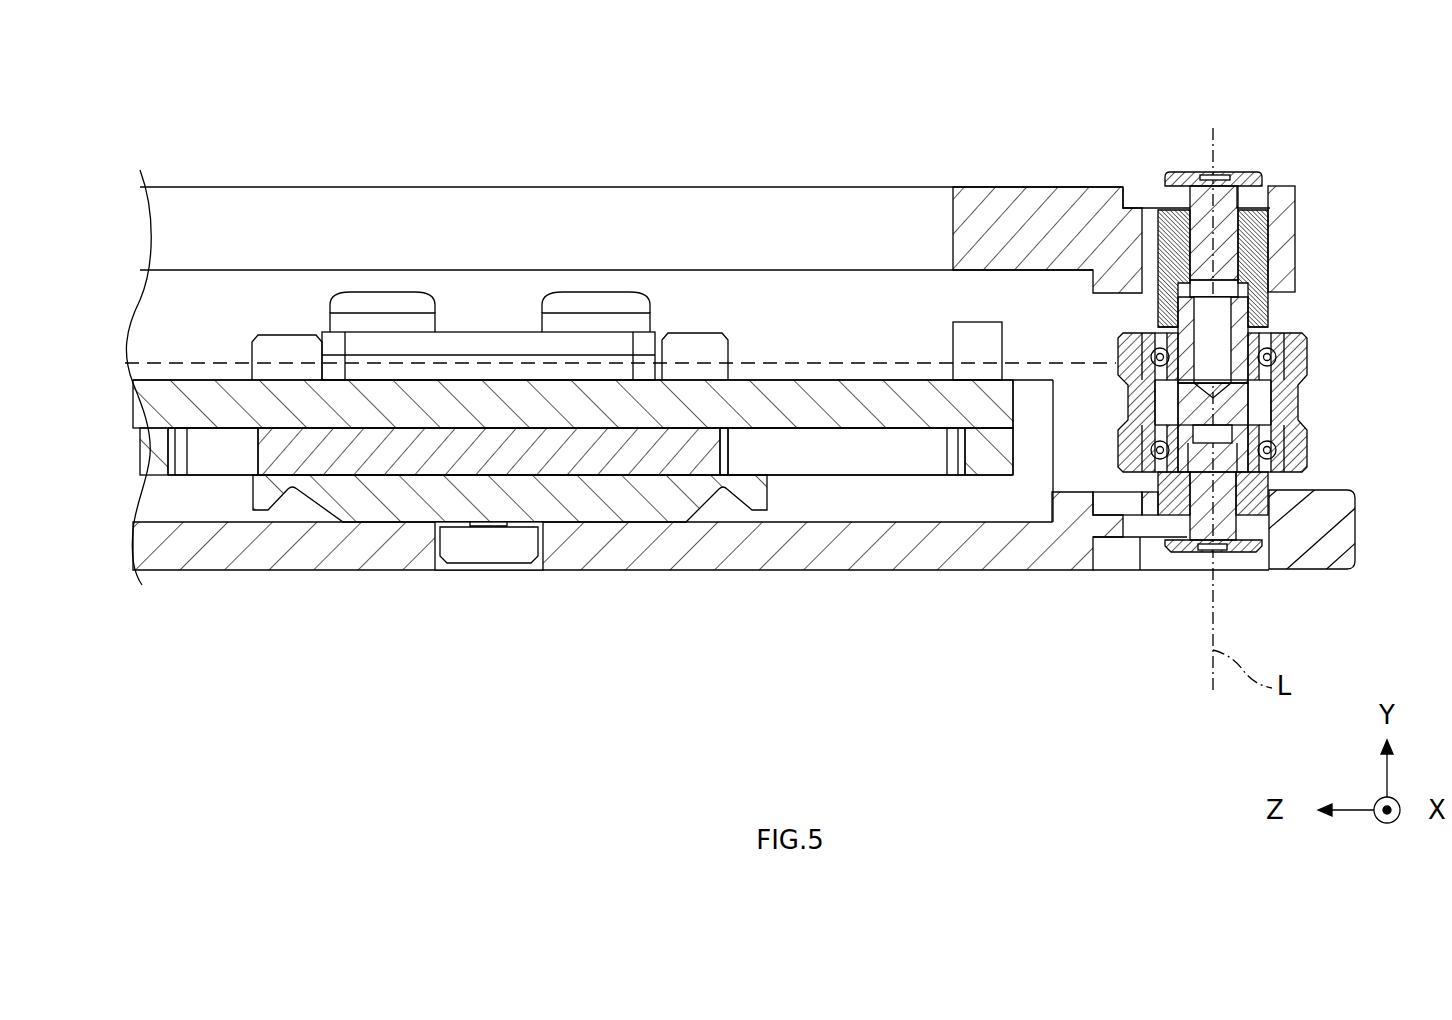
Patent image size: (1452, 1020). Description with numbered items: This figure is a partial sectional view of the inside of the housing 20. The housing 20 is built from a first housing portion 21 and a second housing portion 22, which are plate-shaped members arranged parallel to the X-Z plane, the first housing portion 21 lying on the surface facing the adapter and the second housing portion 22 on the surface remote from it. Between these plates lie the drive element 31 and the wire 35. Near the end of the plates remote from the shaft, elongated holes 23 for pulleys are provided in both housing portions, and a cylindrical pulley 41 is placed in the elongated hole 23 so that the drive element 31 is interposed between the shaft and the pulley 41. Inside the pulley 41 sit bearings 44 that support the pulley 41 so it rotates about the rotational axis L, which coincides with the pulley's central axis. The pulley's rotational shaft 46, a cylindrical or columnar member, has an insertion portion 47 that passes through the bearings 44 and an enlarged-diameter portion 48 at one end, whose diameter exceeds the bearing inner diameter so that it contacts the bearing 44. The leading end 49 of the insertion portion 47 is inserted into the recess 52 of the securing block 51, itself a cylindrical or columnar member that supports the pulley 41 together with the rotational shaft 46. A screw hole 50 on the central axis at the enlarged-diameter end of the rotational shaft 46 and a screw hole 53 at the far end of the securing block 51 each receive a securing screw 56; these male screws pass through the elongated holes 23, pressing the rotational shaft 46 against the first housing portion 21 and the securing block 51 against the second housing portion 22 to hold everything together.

The housing 20 is at (285, 139).
The first housing portion 21 is at (735, 570).
The second housing portion 22 is at (706, 187).
The elongated hole for pulley 23 is at (1126, 188).
The drive element 31 is at (483, 332).
The wire 35 is at (835, 363).
The pulley 41 is at (1294, 333).
The bearing 44 is at (1285, 362).
The pulley's rotational shaft 46 is at (1282, 541).
The insertion portion 47 is at (1283, 397).
The enlarged-diameter portion 48 is at (1272, 499).
The leading end 49 is at (1267, 324).
The screw hole 50 is at (1222, 505).
The securing block 51 is at (1283, 200).
The recess 52 is at (1262, 290).
The screw hole 53 is at (1205, 218).
The securing screw 56 is at (1245, 172).